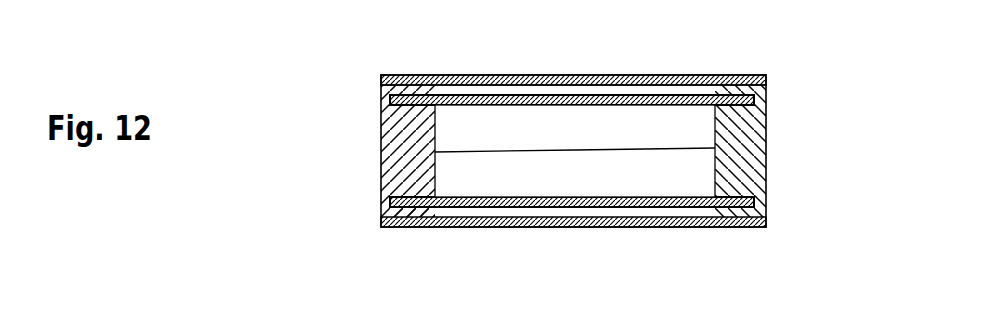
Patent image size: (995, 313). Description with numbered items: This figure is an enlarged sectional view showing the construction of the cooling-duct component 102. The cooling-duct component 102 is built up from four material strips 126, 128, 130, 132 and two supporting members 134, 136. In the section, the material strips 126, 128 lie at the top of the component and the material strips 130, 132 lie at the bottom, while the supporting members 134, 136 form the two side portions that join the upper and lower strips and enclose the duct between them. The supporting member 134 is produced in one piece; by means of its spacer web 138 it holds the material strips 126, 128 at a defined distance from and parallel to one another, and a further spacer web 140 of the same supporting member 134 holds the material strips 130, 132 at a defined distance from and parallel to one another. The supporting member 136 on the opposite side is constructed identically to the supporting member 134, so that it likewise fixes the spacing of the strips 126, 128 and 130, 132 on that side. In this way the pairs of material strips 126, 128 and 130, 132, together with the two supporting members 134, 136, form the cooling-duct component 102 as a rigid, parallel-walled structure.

The cooling-duct component 102 is at (524, 236).
The material strip 126 is at (518, 76).
The material strip 128 is at (606, 79).
The material strip 130 is at (604, 207).
The material strip 132 is at (690, 228).
The supporting member 134 is at (392, 143).
The supporting member 136 is at (740, 145).
The spacer web 138 is at (417, 92).
The spacer web 140 is at (410, 212).